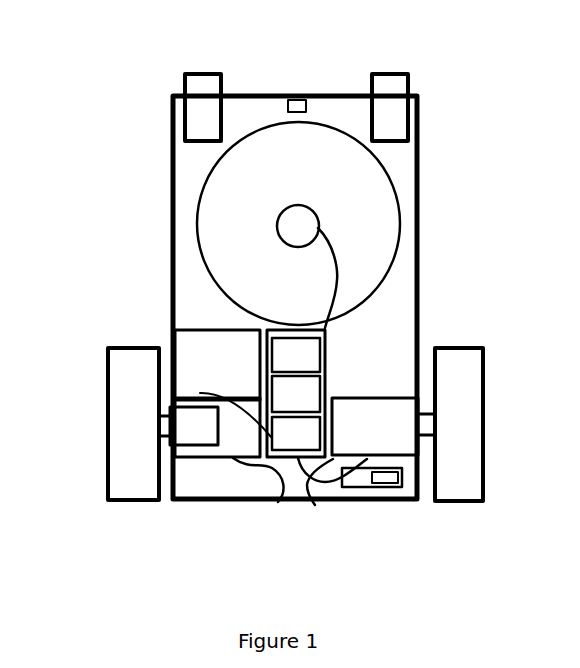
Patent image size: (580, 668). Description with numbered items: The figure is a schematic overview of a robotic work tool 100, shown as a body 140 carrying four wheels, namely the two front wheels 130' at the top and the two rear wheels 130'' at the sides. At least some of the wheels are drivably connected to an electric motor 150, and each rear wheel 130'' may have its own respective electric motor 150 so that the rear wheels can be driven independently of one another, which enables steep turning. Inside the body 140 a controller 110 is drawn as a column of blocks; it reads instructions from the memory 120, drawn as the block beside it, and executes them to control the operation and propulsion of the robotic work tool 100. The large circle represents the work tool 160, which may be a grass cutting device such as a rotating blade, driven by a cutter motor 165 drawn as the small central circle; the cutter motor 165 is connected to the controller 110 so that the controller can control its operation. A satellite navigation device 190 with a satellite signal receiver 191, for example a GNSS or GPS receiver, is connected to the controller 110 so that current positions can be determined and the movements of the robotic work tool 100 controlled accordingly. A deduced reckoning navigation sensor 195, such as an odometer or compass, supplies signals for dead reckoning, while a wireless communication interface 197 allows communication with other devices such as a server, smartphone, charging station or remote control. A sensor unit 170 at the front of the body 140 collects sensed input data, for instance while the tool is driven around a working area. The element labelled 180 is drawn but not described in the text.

The robotic work tool 100 is at (173, 143).
The controller 110 is at (327, 353).
The memory 120 is at (327, 393).
The front wheels 130' is at (308, 103).
The rear wheels 130'' is at (258, 470).
The body 140 is at (193, 500).
The electric motor 150 is at (315, 505).
The work tool 160 is at (203, 266).
The cutter motor 165 is at (278, 226).
The sensor unit 170 is at (294, 97).
The motor 180 is at (188, 352).
The satellite navigation device 190 is at (347, 487).
The satellite signal receiver 191 is at (383, 478).
The deduced reckoning navigation sensor 195 is at (192, 445).
The wireless communication interface 197 is at (200, 393).